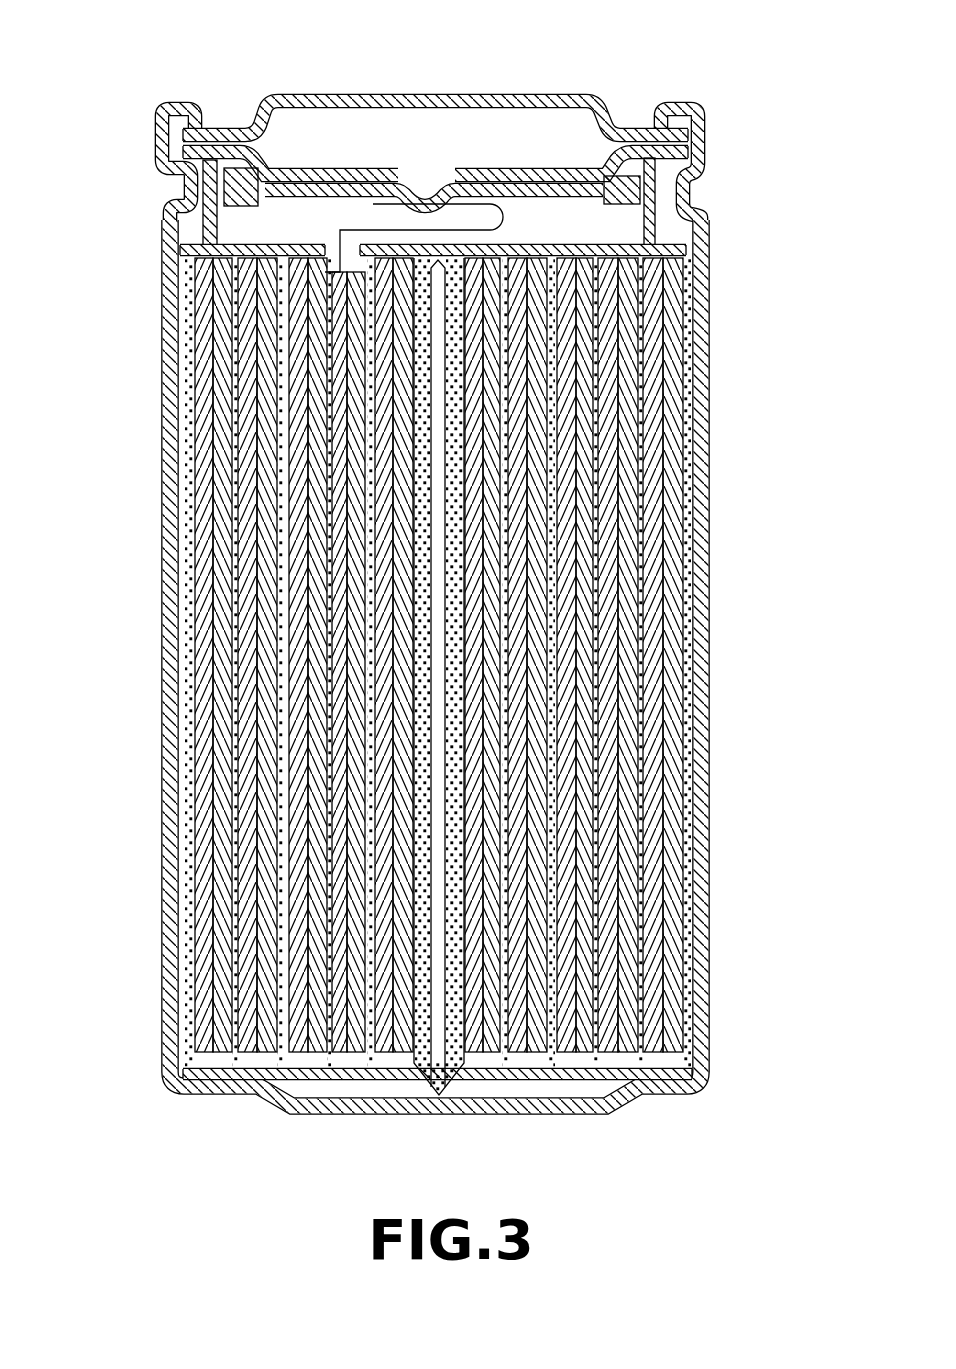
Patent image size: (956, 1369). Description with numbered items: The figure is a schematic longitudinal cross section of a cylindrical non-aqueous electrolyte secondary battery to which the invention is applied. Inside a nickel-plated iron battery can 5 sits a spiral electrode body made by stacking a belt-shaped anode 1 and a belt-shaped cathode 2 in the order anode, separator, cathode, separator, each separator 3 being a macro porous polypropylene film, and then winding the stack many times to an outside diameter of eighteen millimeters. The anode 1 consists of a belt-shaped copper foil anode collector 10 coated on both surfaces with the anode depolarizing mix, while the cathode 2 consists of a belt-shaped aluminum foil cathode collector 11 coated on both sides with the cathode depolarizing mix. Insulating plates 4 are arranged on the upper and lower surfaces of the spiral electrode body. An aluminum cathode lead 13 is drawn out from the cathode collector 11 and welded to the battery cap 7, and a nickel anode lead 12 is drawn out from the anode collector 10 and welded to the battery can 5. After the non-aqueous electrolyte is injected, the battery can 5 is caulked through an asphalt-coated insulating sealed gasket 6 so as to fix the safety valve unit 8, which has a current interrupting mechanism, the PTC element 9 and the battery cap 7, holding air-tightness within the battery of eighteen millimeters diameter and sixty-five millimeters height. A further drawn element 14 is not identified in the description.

The anode 1 is at (665, 385).
The cathode 2 is at (620, 577).
The separator 3 is at (645, 782).
The insulating plates 4 is at (660, 1078).
The battery can 5 is at (160, 446).
The insulating sealed gasket 6 is at (168, 105).
The battery cap 7 is at (428, 97).
The safety valve unit 8 is at (482, 170).
The PTC element 9 is at (690, 150).
The anode collector 10 is at (200, 640).
The cathode collector 11 is at (255, 835).
The anode lead 12 is at (294, 1090).
The cathode lead 13 is at (505, 215).
The winding core 14 is at (478, 1045).